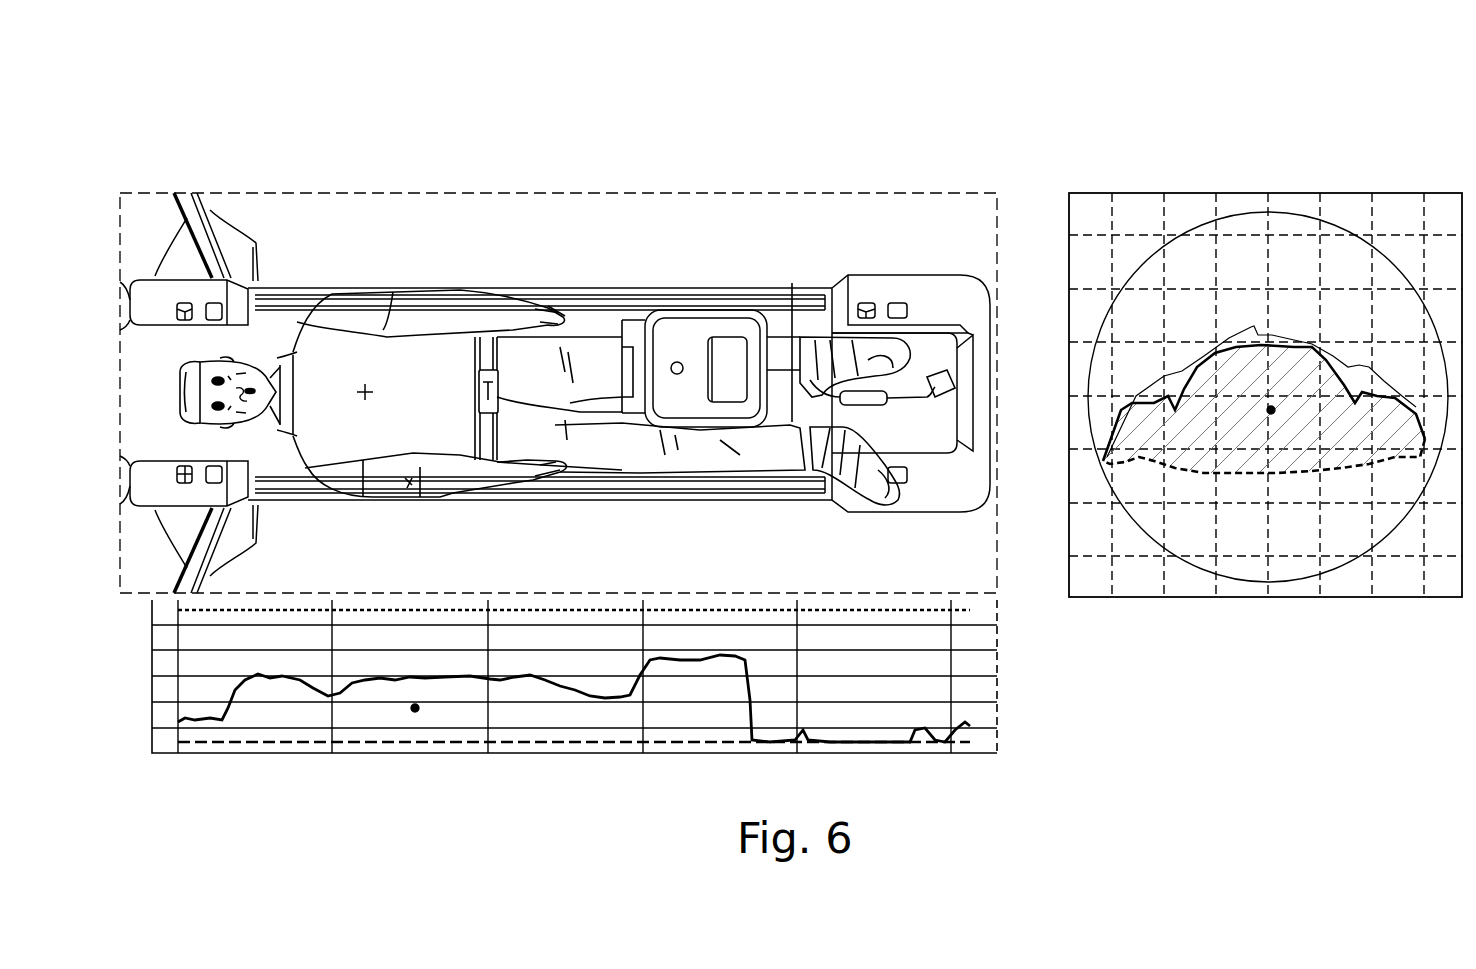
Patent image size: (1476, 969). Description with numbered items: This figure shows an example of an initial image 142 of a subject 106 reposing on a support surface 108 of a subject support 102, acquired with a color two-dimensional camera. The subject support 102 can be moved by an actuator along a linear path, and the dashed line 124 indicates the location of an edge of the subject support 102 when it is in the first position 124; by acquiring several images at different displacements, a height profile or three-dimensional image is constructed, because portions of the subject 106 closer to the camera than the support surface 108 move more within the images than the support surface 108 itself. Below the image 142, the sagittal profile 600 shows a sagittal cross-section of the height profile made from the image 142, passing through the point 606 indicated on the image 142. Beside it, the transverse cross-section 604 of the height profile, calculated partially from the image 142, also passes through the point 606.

The initial image 142 is at (494, 193).
The subject support 102 is at (792, 287).
The subject 106 is at (517, 313).
The support surface 108 is at (593, 320).
The first position 124 is at (440, 278).
The point 606 is at (369, 384).
The sagittal profile 600 is at (997, 720).
The transverse cross-section 604 is at (1250, 193).